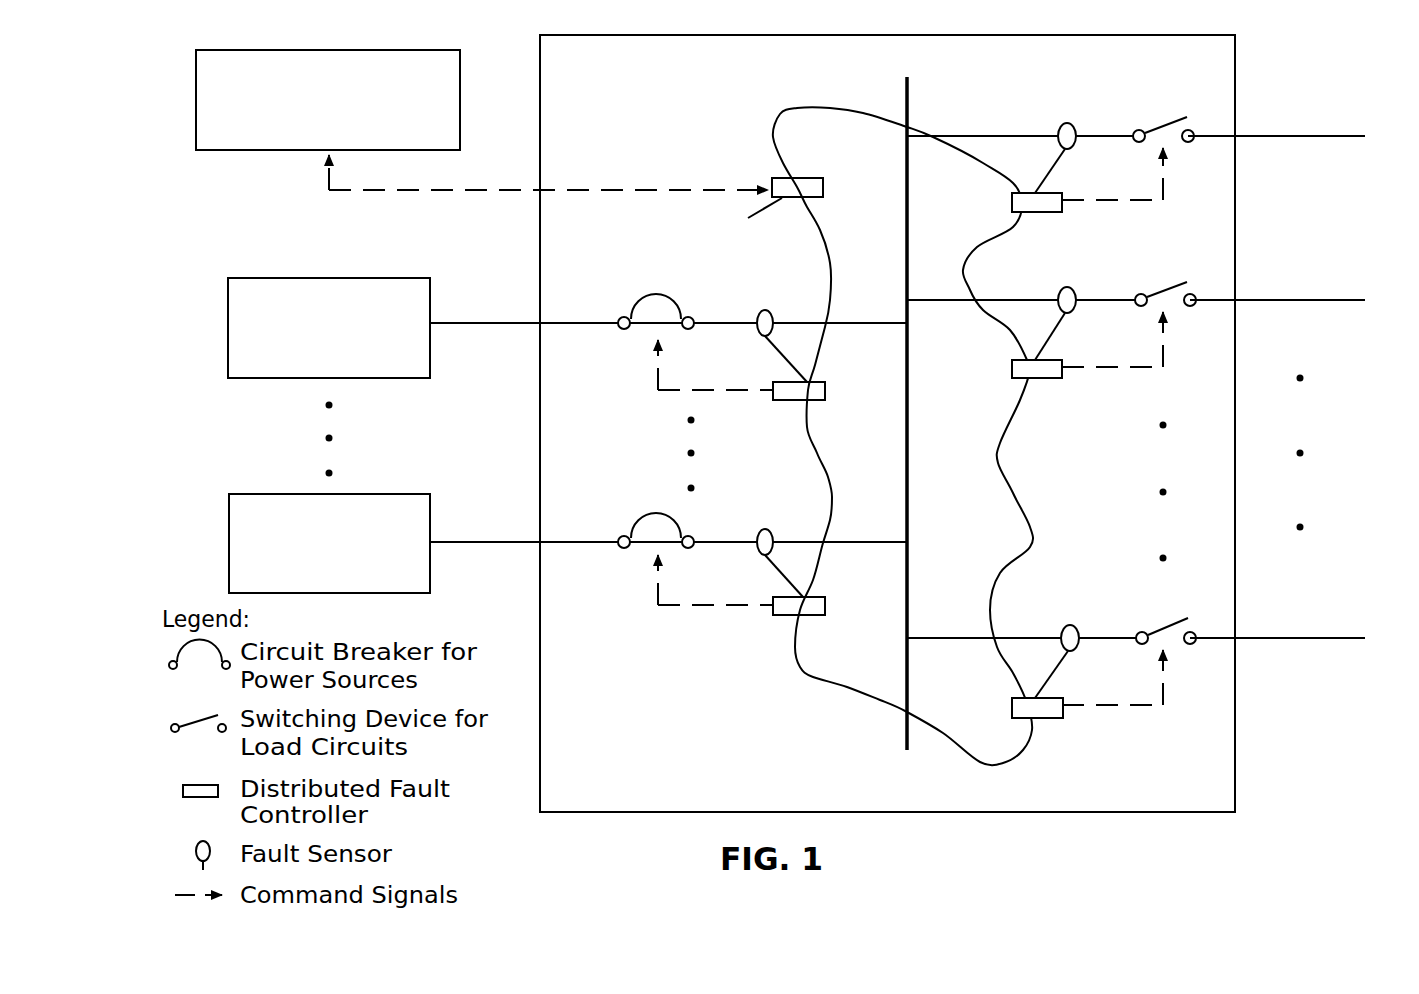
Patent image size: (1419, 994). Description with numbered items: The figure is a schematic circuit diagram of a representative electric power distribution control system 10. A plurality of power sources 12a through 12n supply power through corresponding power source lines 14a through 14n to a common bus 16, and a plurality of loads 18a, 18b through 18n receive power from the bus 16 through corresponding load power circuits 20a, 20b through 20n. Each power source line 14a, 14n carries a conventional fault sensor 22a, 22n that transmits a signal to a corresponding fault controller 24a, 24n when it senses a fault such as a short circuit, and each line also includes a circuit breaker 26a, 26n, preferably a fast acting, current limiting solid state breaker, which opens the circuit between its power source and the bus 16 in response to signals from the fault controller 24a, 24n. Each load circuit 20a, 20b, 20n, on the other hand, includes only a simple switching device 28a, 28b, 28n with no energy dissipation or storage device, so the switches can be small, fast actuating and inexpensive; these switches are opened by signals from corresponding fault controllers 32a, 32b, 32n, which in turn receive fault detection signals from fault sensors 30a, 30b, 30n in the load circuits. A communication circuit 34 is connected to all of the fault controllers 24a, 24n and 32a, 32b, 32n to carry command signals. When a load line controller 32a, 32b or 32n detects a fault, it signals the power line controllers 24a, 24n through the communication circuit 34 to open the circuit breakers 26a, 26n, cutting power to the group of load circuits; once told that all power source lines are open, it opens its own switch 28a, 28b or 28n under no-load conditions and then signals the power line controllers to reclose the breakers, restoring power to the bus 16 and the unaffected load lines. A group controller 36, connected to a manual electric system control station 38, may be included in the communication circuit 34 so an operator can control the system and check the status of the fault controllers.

The control system 10 is at (1212, 78).
The power source 12a is at (342, 277).
The power source 12n is at (247, 492).
The power source line 14a is at (855, 323).
The power source line 14n is at (855, 542).
The bus 16 is at (908, 508).
The load 18a is at (1280, 137).
The load 18b is at (1328, 302).
The load 18n is at (1288, 640).
The load power circuit 20a is at (983, 133).
The load power circuit 20b is at (943, 302).
The load power circuit 20n is at (958, 637).
The fault sensor 22a is at (768, 308).
The fault sensor 22n is at (768, 527).
The fault controller 24a is at (825, 390).
The fault controller 24n is at (825, 605).
The circuit breaker 26a is at (640, 305).
The circuit breaker 26n is at (643, 517).
The switching device 28a is at (1160, 122).
The switching device 28b is at (1167, 290).
The switching device 28n is at (1167, 623).
The fault sensor 30a is at (1072, 118).
The fault sensor 30b is at (1060, 287).
The fault sensor 30n is at (1070, 623).
The fault controller 32a is at (1053, 213).
The fault controller 32b is at (1053, 380).
The fault controller 32n is at (1047, 718).
The communication circuit 34 is at (797, 106).
The group controller 36 is at (825, 187).
The manual electric system control station 38 is at (260, 152).